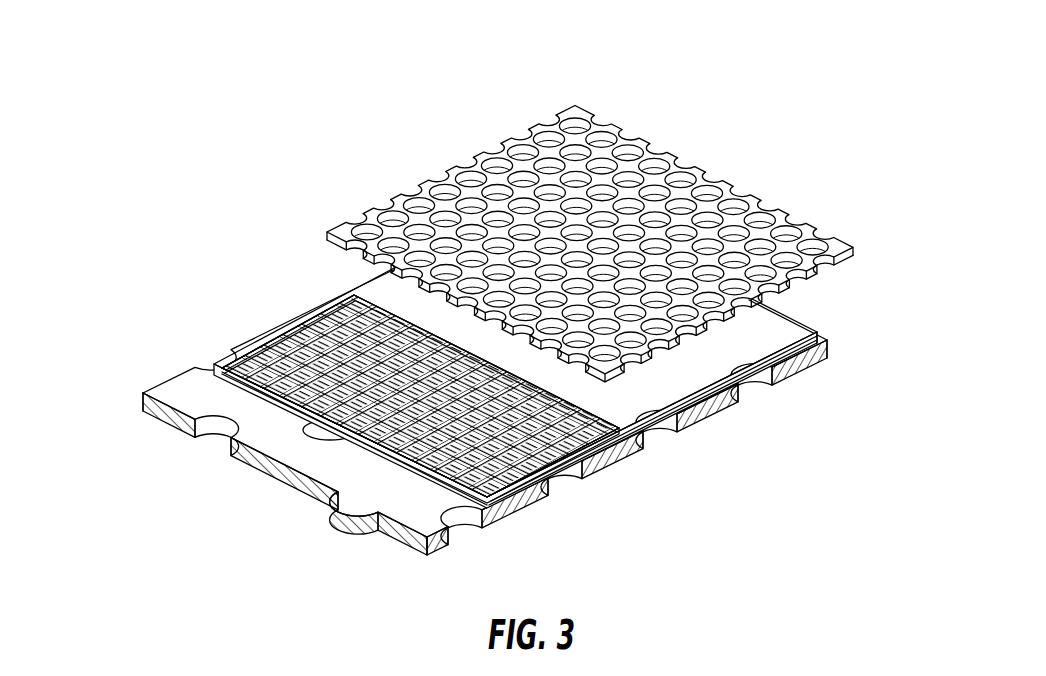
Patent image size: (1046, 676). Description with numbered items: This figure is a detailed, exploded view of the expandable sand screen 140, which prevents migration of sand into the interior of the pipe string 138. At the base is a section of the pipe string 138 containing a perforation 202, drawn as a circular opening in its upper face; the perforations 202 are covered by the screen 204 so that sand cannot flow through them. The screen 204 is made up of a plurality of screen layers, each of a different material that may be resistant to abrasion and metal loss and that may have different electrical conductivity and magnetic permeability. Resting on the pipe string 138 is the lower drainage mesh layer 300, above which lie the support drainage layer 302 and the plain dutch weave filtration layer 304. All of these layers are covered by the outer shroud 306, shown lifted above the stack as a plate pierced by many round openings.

The expandable sand screen 140 is at (530, 302).
The screen 204 is at (557, 244).
The outer shroud 306 is at (726, 172).
The plain dutch weave filtration layer 304 is at (348, 290).
The support drainage layer 302 is at (290, 325).
The lower drainage mesh layer 300 is at (381, 397).
The perforation 202 is at (485, 412).
The pipe string 138 is at (304, 420).